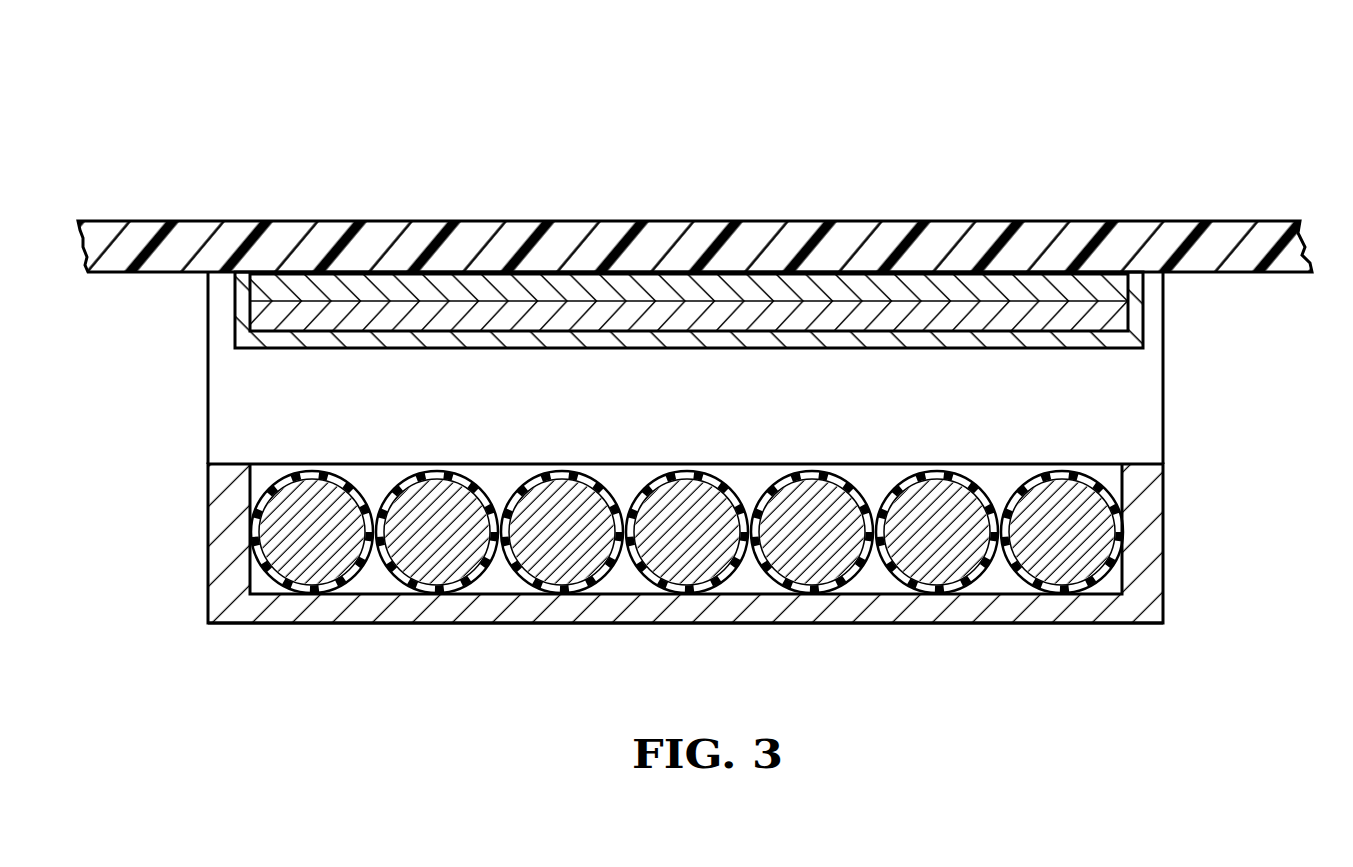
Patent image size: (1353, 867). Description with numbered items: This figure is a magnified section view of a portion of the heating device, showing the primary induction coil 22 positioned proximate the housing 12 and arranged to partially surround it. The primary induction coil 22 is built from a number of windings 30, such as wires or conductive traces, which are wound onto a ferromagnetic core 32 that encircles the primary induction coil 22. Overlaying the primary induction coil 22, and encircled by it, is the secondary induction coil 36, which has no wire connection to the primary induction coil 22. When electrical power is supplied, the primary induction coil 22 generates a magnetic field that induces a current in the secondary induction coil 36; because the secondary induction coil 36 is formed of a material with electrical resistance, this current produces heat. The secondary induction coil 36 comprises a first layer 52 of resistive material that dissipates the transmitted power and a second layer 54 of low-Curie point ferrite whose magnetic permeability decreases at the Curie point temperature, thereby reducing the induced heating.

The housing 12 is at (1063, 222).
The primary induction coil 22 is at (1080, 623).
The windings 30 is at (420, 565).
The ferromagnetic core 32 is at (570, 620).
The secondary induction coil 36 is at (238, 300).
The first layer 52 is at (1115, 317).
The second layer 54 is at (1115, 287).